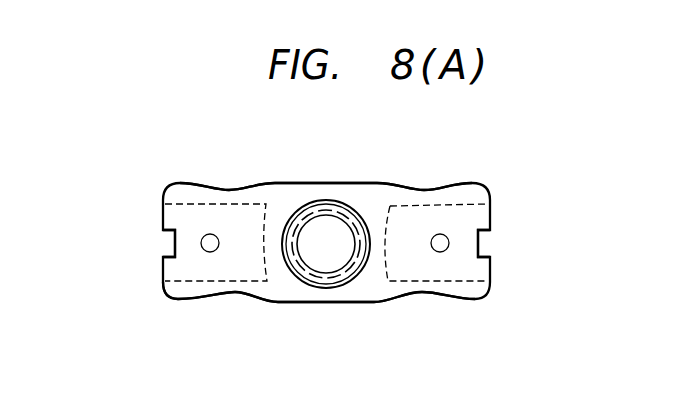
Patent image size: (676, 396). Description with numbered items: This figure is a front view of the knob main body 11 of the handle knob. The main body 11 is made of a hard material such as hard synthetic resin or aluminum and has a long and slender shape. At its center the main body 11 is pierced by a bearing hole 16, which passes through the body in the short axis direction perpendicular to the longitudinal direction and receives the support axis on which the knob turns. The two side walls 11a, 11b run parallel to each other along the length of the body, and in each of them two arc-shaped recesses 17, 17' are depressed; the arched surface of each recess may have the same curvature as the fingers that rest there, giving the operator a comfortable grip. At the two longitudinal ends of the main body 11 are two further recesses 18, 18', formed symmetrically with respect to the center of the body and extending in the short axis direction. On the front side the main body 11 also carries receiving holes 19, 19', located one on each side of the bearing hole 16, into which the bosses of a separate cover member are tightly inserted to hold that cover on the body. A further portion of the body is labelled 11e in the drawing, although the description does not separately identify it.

The knob main body 11 is at (499, 180).
The side wall 11a is at (312, 182).
The side wall 11b is at (306, 303).
The corner portion of plate 11e is at (207, 268).
The bearing hole 16 is at (335, 199).
The recess 17 is at (326, 166).
The recess 17' is at (326, 316).
The recess 18 is at (143, 235).
The recess 18' is at (515, 248).
The receiving hole 19 is at (165, 253).
The receiving hole 19' is at (454, 188).